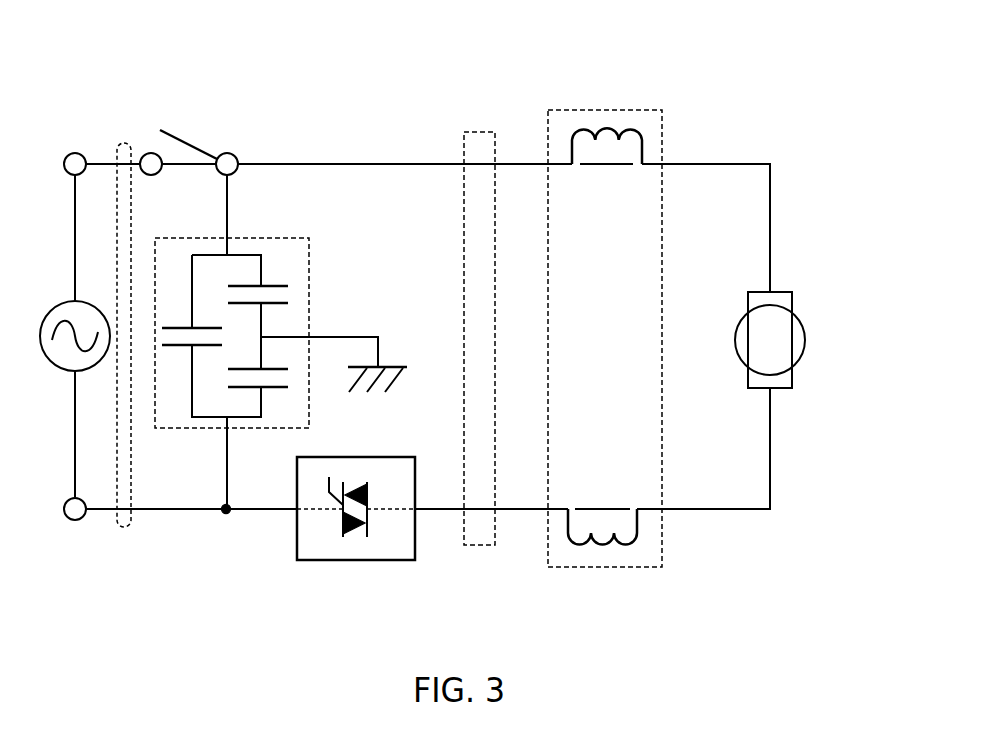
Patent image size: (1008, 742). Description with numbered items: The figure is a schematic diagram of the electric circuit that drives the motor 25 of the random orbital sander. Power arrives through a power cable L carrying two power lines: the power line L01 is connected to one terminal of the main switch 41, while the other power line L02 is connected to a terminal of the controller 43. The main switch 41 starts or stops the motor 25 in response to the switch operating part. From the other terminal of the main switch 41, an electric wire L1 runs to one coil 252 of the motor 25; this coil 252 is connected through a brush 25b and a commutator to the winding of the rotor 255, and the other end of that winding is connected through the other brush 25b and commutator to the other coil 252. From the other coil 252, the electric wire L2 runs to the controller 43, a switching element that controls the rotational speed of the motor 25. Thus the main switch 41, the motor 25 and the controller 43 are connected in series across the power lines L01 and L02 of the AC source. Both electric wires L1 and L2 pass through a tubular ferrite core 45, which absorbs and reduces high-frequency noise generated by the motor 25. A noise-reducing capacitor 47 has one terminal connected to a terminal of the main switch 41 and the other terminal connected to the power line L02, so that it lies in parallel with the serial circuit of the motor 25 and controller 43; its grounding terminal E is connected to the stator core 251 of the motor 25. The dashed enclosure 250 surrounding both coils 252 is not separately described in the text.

The power line L01 is at (103, 162).
The other power line L02 is at (100, 512).
The power cable L is at (125, 143).
The main switch 41 is at (183, 140).
The capacitor 47 is at (249, 235).
The grounding terminal E is at (337, 335).
The stator core 251 is at (396, 366).
The electric wire L1 is at (378, 162).
The electric wire L2 is at (437, 512).
The controller 43 is at (353, 560).
The ferrite core 45 is at (485, 128).
The choke coil unit 250 is at (666, 146).
The coil 252 is at (607, 123).
The motor 25 is at (783, 284).
The rotor 255 is at (793, 340).
The brush 25b is at (790, 300).